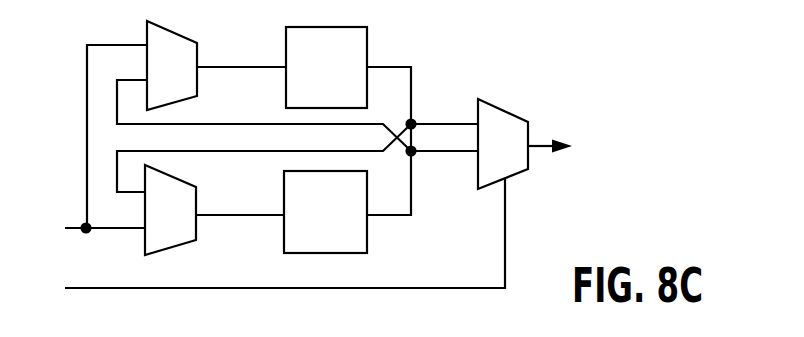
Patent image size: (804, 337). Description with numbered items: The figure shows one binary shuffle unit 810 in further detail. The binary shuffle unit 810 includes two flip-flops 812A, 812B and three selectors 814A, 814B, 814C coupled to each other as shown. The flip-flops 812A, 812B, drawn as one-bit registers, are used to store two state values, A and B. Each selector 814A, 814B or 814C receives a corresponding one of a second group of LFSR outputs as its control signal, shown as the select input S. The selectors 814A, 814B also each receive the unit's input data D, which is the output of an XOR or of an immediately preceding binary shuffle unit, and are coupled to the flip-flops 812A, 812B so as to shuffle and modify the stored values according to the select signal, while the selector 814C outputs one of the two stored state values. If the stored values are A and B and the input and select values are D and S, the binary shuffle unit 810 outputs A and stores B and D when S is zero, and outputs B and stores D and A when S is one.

The binary shuffle unit 810 is at (686, 110).
The flip-flop 812A is at (285, 87).
The flip-flop 812B is at (283, 179).
The selector 814A is at (200, 22).
The selector 814B is at (206, 172).
The selector 814C is at (516, 116).